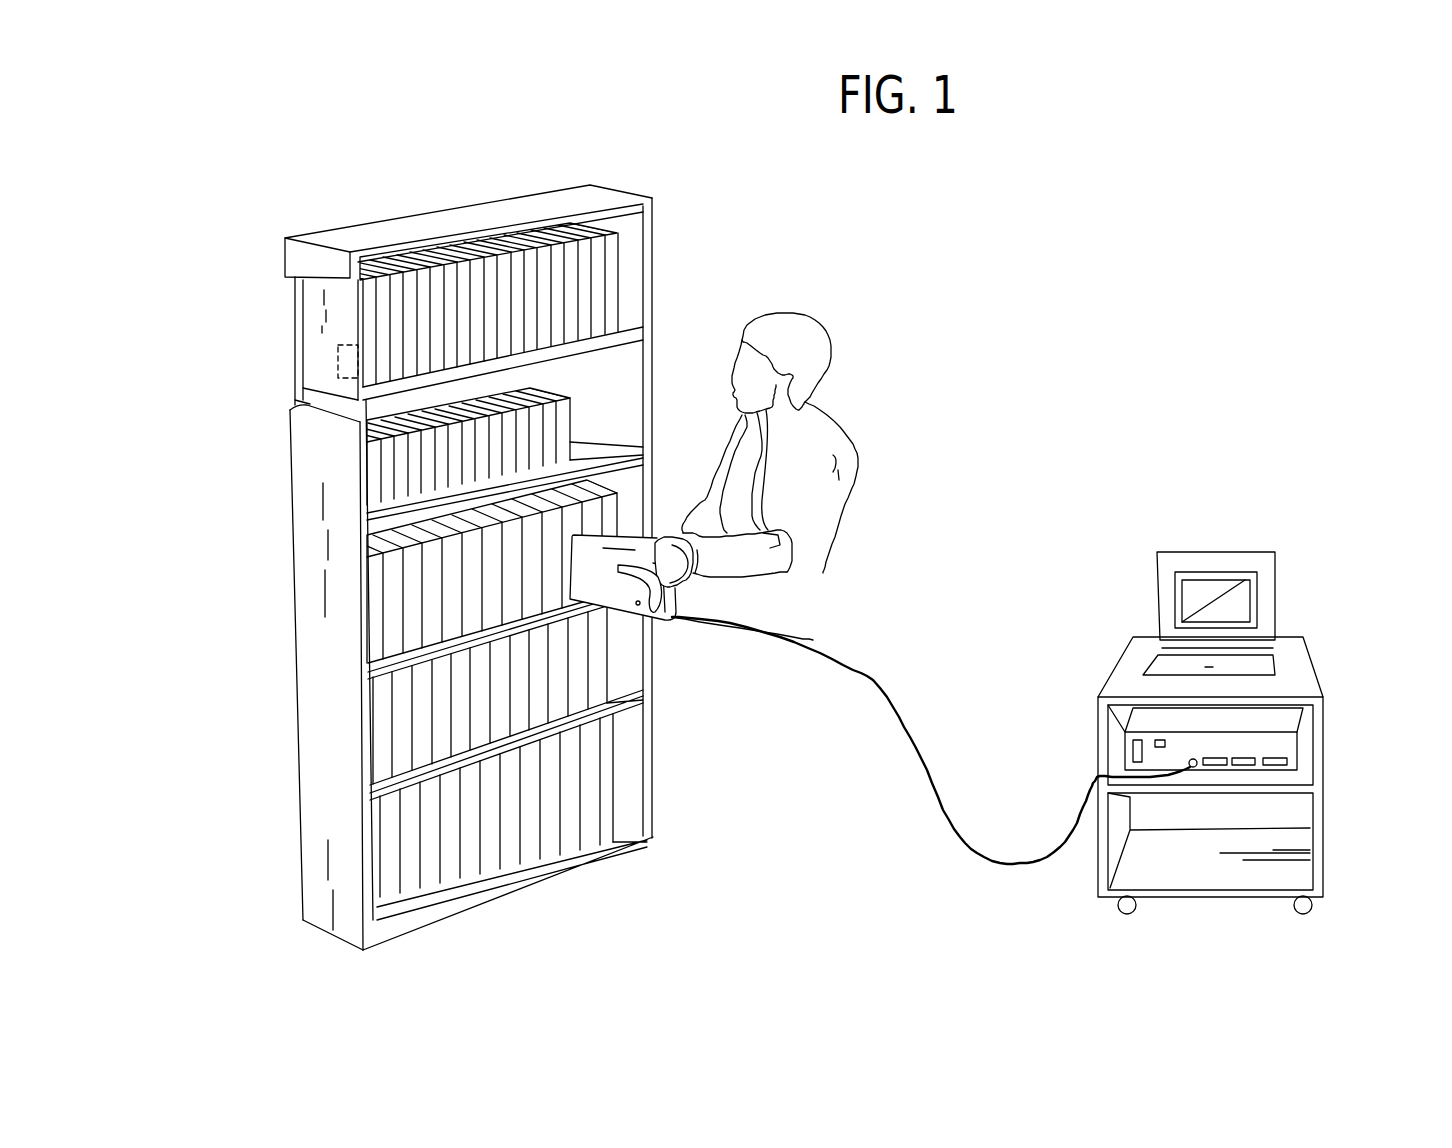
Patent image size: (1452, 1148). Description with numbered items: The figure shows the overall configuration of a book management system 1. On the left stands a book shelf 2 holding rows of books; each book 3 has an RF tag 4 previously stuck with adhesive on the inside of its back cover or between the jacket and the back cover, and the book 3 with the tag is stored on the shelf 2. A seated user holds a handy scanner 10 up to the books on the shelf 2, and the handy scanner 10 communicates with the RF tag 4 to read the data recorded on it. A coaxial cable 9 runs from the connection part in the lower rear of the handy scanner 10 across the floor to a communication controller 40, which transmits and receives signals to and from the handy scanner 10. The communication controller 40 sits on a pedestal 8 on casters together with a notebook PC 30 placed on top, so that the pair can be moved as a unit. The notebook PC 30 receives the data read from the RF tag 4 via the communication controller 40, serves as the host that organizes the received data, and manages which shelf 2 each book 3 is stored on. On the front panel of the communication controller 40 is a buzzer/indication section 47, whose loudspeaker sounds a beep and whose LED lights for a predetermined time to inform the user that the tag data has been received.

The book management system 1 is at (1226, 254).
The book shelf 2 is at (300, 265).
The book 3 is at (322, 323).
The RF tag 4 is at (338, 362).
The pedestal 8 is at (1133, 872).
The coaxial cable 9 is at (877, 683).
The handy scanner 10 is at (627, 622).
The notebook PC 30 is at (1190, 595).
The communication controller 40 is at (1155, 720).
The buzzer/indication section 47 is at (1128, 773).